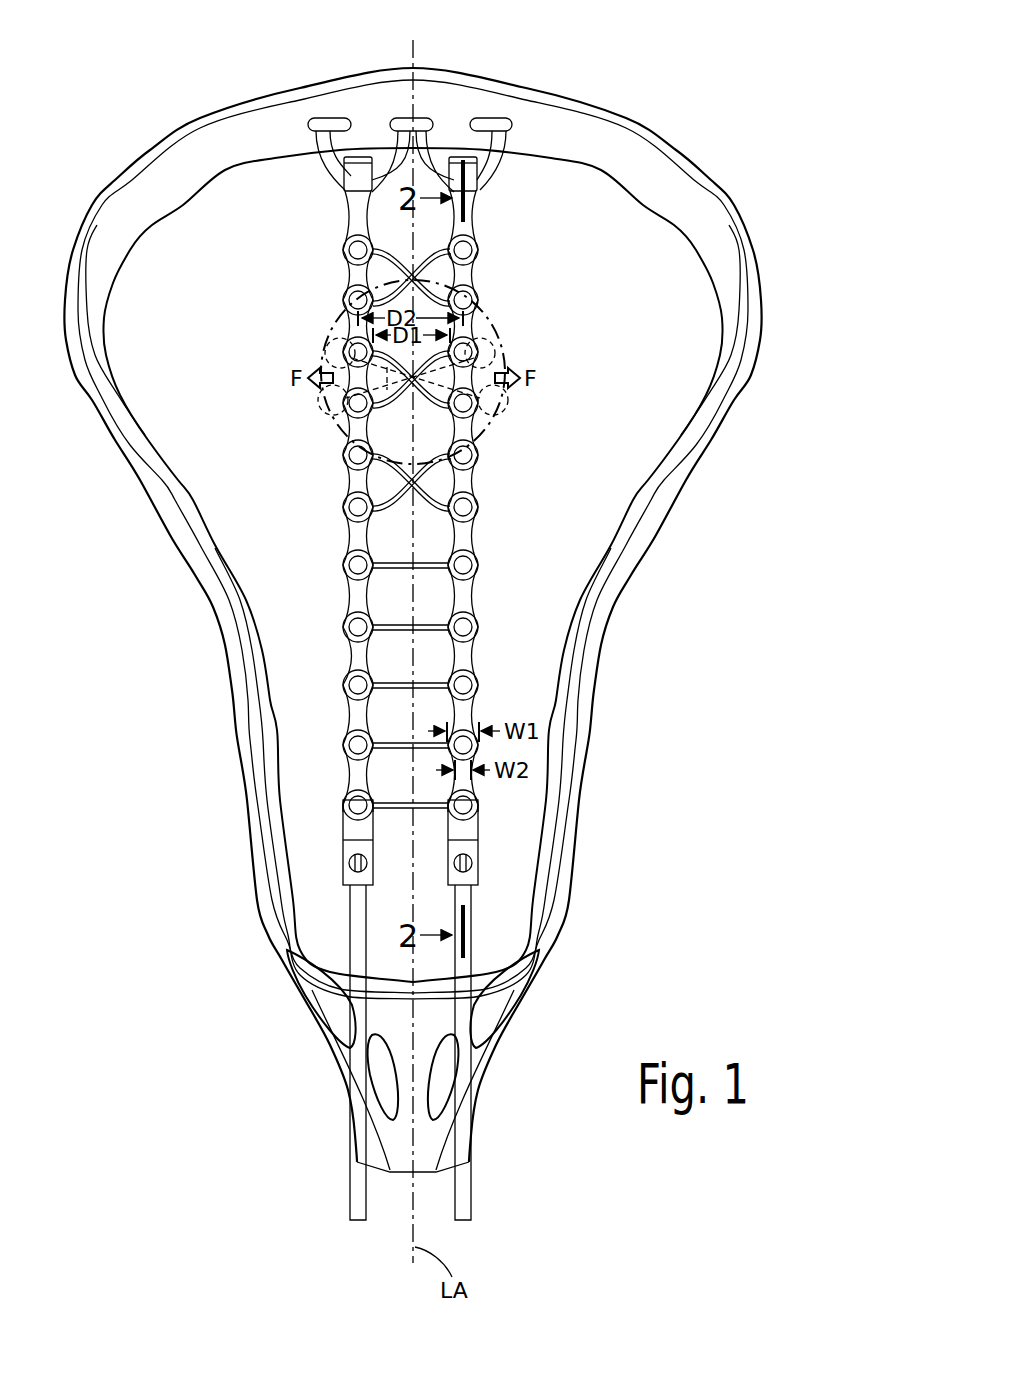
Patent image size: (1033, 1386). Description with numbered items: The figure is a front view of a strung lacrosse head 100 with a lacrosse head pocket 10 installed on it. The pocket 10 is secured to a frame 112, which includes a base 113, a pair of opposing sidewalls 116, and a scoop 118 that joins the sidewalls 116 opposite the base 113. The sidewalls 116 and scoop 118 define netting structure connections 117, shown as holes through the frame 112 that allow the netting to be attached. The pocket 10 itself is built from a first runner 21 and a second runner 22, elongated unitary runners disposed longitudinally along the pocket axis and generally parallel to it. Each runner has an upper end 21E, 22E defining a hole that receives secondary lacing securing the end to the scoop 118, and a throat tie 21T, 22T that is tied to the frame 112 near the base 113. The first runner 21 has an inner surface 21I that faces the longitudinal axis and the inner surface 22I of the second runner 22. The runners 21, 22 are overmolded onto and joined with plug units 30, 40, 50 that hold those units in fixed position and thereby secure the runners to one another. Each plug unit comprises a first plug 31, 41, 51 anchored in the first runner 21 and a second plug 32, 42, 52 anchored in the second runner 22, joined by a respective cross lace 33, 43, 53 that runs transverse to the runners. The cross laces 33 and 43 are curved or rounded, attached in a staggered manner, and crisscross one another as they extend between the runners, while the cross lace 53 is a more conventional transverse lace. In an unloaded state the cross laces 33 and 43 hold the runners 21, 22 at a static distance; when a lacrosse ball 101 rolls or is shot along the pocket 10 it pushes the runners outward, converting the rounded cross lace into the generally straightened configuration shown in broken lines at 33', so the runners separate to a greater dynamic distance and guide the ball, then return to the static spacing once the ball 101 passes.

The lacrosse head 100 is at (680, 118).
The lacrosse head pocket 10 is at (280, 172).
The lacrosse ball 101 is at (508, 365).
The frame 112 is at (692, 470).
The base 113 is at (303, 1010).
The sidewalls 116 is at (236, 690).
The netting structure connections 117 is at (395, 112).
The scoop 118 is at (430, 150).
The first runner 21 is at (365, 150).
The upper end of first runner 21E is at (348, 180).
The inner surface of first runner 21I is at (383, 655).
The throat tie of first runner 21T is at (358, 1203).
The second runner 22 is at (458, 150).
The upper end of second runner 22E is at (480, 192).
The inner surface of second runner 22I is at (448, 642).
The throat tie of second runner 22T is at (467, 1203).
The plug unit 30 is at (368, 464).
The first plug 31 is at (355, 456).
The second plug 32 is at (468, 508).
The cross lace 33 is at (359, 354).
The straightened cross lace 33' is at (384, 390).
The plug unit 40 is at (338, 522).
The first plug 41 is at (360, 518).
The second plug 42 is at (470, 458).
The cross lace 43 is at (446, 460).
The plug unit 50 is at (338, 583).
The first plug 51 is at (358, 572).
The second plug 52 is at (468, 567).
The cross lace 53 is at (387, 568).